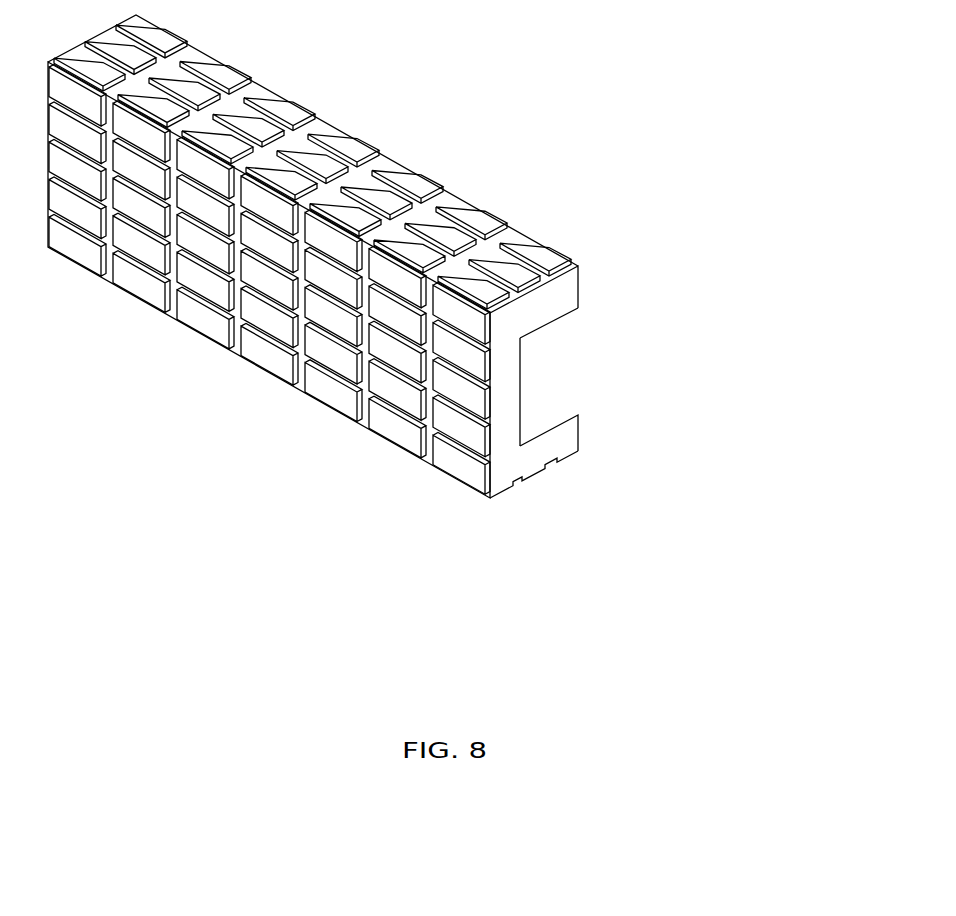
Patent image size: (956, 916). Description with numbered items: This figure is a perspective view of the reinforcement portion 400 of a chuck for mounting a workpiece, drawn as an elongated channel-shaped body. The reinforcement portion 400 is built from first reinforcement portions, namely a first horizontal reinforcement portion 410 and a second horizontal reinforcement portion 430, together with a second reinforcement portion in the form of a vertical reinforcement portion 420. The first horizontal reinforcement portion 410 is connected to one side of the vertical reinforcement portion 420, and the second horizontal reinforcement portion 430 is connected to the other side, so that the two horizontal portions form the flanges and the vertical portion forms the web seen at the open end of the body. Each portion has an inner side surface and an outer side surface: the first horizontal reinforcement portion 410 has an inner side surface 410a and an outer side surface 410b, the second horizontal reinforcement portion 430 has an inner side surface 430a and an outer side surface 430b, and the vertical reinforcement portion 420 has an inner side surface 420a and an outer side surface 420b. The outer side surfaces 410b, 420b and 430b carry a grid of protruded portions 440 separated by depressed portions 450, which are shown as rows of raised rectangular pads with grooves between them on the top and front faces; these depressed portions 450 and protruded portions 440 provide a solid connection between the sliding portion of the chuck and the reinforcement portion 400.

The reinforcement portion 400 is at (438, 323).
The first horizontal reinforcement portion 410 is at (659, 445).
The inner side surface of the first horizontal reinforcement portion 410a is at (562, 410).
The outer side surface of the first horizontal reinforcement portion 410b is at (567, 467).
The vertical reinforcement portion 420 is at (307, 346).
The inner side surface of the vertical reinforcement portion 420a is at (531, 371).
The outer side surface of the vertical reinforcement portion 420b is at (480, 383).
The second horizontal reinforcement portion 430 is at (436, 183).
The inner side surface of the second horizontal reinforcement portion 430a is at (563, 320).
The outer side surface of the second horizontal reinforcement portion 430b is at (557, 254).
The protruded portions 440 is at (287, 107).
The depressed portions 450 is at (363, 170).